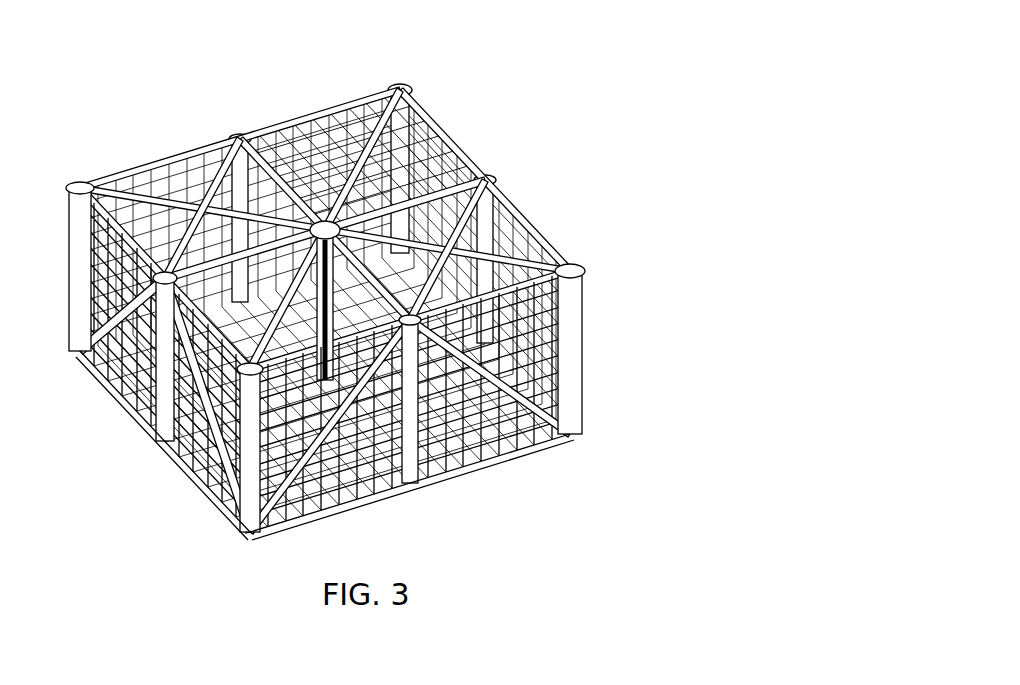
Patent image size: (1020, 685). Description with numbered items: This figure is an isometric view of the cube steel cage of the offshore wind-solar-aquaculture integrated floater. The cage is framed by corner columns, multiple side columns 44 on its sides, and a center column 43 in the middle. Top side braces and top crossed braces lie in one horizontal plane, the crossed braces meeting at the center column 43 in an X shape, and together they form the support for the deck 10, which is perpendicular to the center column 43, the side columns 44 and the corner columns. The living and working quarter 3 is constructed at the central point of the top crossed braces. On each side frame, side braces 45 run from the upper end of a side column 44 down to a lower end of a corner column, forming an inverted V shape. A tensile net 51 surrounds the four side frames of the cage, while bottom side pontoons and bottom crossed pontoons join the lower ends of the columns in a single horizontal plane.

The deck 10 is at (433, 123).
The living and working quarter 3 is at (463, 160).
The side column 44 is at (483, 200).
The center column 43 is at (330, 312).
The tensile net 51 is at (578, 283).
The side brace 45 is at (557, 355).